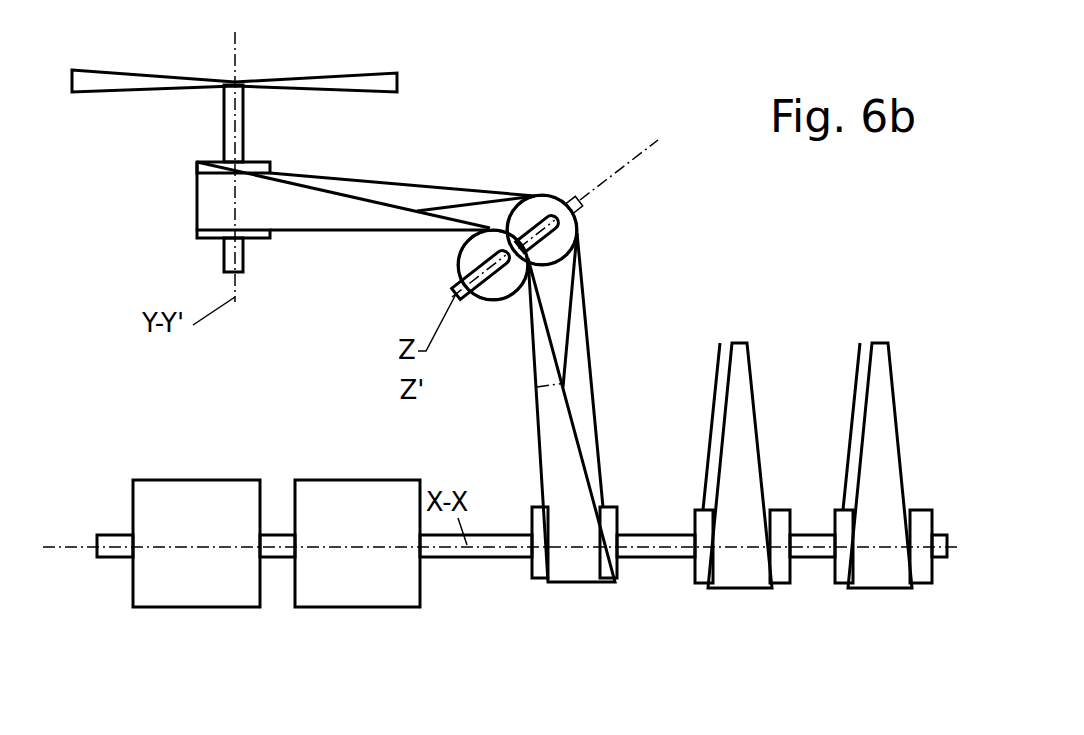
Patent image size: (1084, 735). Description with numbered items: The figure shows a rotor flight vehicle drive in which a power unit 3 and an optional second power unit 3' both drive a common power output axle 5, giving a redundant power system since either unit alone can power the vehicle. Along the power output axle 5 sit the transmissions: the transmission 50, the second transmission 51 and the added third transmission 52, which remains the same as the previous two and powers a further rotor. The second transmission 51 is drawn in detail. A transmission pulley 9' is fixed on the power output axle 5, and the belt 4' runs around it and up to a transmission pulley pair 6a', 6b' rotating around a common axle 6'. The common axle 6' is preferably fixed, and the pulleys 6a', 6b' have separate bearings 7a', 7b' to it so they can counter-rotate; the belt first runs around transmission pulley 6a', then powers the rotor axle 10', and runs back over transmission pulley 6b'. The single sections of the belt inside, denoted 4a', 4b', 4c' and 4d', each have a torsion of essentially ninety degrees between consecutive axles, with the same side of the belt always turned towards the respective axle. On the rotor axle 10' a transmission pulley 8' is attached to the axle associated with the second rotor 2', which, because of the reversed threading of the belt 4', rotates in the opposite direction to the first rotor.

The second rotor 2' is at (243, 52).
The rotor axle 10' is at (173, 178).
The transmission pulley 8' is at (187, 202).
The inside of belt 4b' is at (402, 166).
The inside of belt 4c' is at (343, 251).
The common axle 6' is at (462, 268).
The transmission pulley 6a' is at (537, 181).
The transmission pulley 6b' is at (450, 266).
The bearing 7a' is at (590, 235).
The bearing 7b' is at (480, 306).
The second transmission 51 is at (628, 103).
The belt 4' is at (592, 420).
The inside of belt 4d' is at (497, 327).
The inside of belt 4a' is at (632, 370).
The transmission pulley 9' is at (509, 512).
The power output axle 5 is at (648, 533).
The second power unit 3' is at (196, 543).
The power unit 3 is at (357, 543).
The transmission 50 is at (750, 292).
The third transmission 52 is at (880, 293).